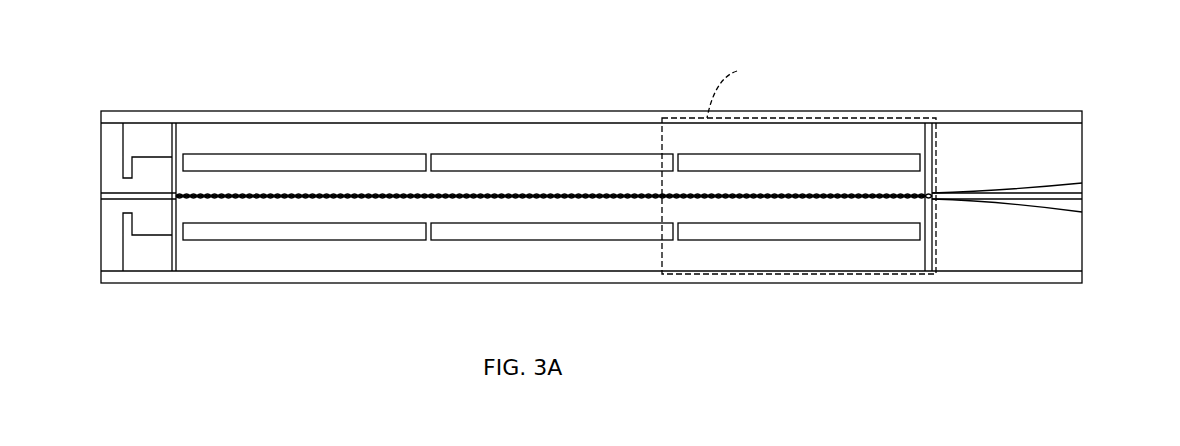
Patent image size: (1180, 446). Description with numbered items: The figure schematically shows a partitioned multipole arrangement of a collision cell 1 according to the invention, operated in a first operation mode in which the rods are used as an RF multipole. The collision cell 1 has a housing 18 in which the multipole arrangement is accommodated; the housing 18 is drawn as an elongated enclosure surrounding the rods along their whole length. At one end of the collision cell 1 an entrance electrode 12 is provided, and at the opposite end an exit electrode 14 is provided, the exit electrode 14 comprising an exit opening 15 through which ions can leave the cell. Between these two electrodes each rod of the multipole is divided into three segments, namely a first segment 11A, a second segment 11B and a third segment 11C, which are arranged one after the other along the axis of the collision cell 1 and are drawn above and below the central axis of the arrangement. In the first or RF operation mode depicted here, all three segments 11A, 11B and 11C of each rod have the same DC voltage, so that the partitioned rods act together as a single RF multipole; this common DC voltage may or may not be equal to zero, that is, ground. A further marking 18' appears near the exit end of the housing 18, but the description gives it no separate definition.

The collision cell 1 is at (641, 64).
The housing 18 is at (591, 170).
The entrance electrode 12 is at (175, 258).
The exit opening 15 is at (920, 188).
The first segment 11A is at (320, 240).
The second segment 11B is at (475, 240).
The third segment 11C is at (787, 240).
The exit electrode 14 is at (926, 248).
The fanned strand ends 18' is at (1042, 167).